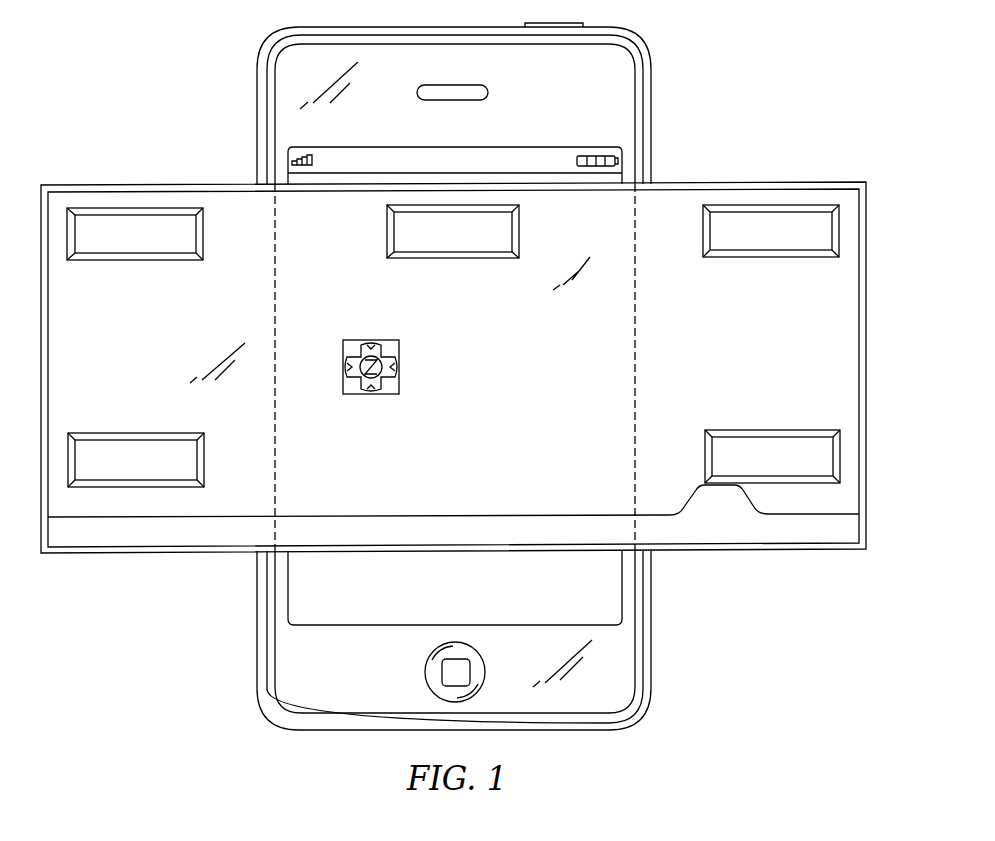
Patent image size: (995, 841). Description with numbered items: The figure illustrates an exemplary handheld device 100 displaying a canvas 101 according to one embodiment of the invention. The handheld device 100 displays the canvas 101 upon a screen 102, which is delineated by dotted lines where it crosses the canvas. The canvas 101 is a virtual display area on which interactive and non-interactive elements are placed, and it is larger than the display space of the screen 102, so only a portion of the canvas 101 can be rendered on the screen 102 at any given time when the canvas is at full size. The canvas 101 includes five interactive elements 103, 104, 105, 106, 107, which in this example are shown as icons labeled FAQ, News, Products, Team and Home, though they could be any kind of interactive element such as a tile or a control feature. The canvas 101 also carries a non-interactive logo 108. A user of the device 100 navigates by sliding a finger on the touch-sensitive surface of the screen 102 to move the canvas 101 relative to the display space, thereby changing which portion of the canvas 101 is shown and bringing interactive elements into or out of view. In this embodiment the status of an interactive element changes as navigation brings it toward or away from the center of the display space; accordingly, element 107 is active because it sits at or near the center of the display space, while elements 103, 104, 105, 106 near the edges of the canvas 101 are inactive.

The handheld device 100 is at (597, 26).
The canvas 101 is at (710, 182).
The screen 102 is at (345, 231).
The interactive element 103 is at (163, 260).
The interactive element 104 is at (152, 433).
The interactive element 105 is at (782, 257).
The interactive element 106 is at (773, 430).
The interactive element 107 is at (423, 258).
The non-interactive logo 108 is at (488, 353).